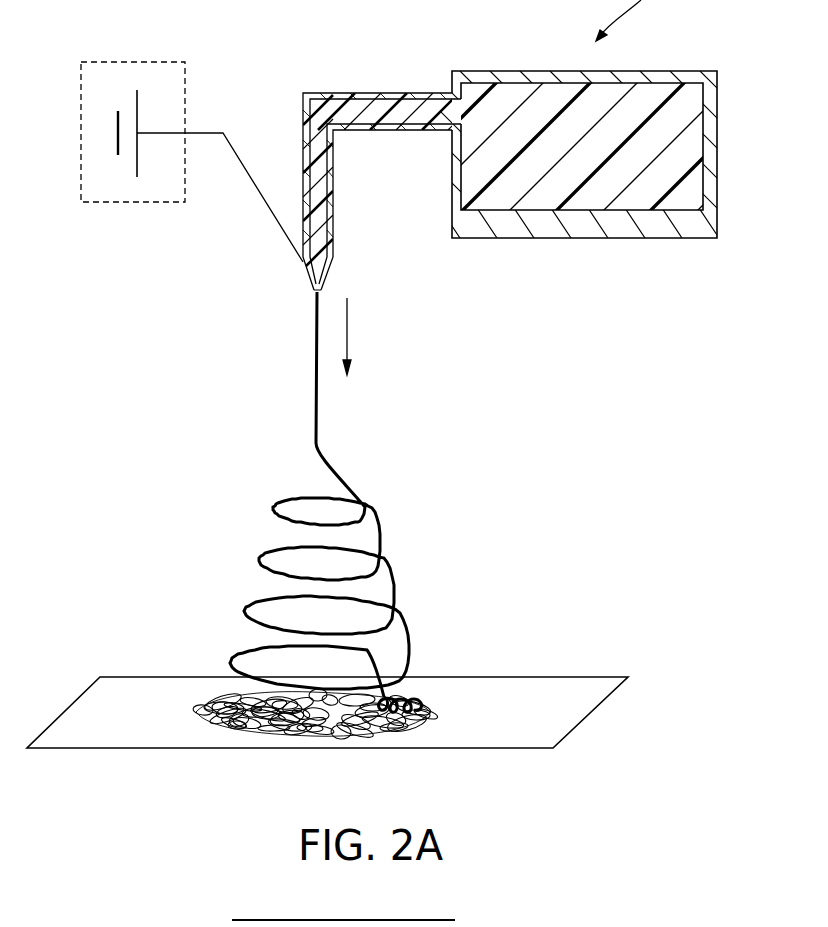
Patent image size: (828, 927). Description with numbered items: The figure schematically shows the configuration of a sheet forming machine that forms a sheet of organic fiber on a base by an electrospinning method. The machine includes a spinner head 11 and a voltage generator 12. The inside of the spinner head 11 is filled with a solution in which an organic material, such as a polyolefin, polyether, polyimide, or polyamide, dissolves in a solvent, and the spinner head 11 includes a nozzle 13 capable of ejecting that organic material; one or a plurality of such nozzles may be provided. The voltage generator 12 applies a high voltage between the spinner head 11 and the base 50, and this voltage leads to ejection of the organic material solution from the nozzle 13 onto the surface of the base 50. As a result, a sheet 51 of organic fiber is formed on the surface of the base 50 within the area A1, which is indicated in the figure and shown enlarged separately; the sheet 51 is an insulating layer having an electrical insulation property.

The spinner head 11 is at (341, 197).
The voltage generator 12 is at (143, 57).
The nozzle 13 is at (314, 290).
The base 50 is at (489, 738).
The sheet 51 is at (291, 735).
The area A1 is at (213, 732).